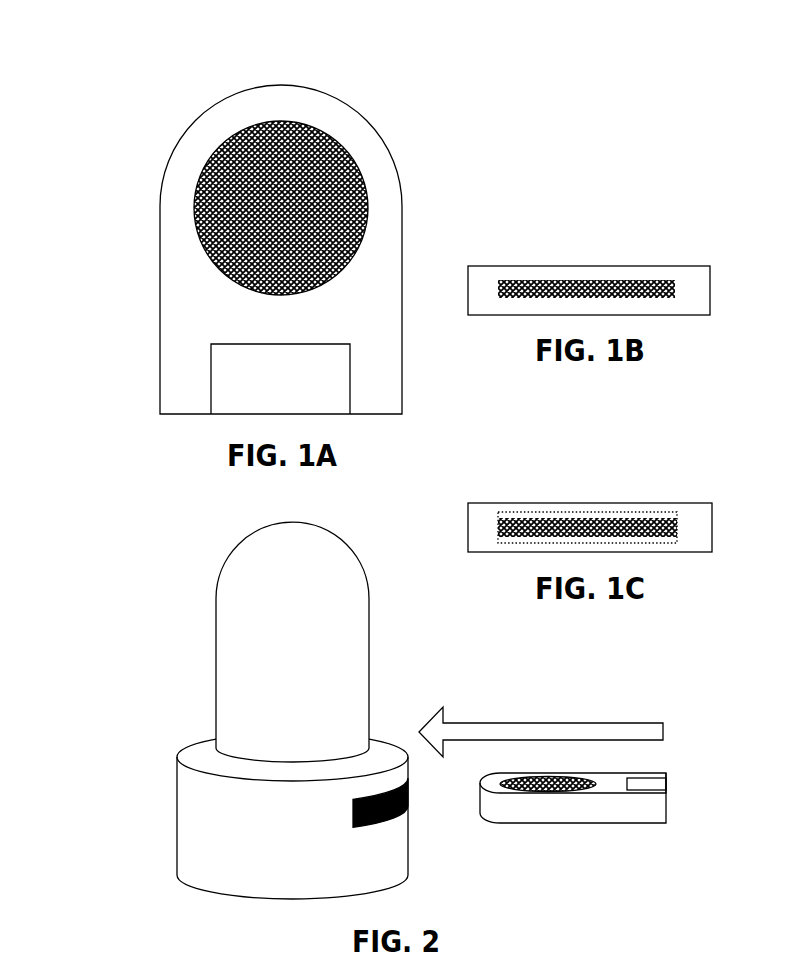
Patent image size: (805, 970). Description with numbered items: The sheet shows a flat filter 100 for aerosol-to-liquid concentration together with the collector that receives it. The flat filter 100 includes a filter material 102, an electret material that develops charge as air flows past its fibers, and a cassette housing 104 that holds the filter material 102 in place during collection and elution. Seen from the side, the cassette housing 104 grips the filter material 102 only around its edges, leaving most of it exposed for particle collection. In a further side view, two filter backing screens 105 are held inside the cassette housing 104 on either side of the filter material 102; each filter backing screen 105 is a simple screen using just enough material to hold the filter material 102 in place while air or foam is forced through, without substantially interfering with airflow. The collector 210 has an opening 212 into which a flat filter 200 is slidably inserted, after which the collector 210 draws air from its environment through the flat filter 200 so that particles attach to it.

In FIG. 1A, the flat filter 100 is at (275, 249).
In FIG. 1B, the flat filter 100 is at (589, 253).
In FIG. 1C, the flat filter 100 is at (570, 514).
In FIG. 1A, the filter material 102 is at (368, 205).
In FIG. 1B, the filter material 102 is at (590, 282).
In FIG. 1C, the filter material 102 is at (613, 517).
In FIG. 1A, the cassette housing 104 is at (160, 303).
In FIG. 1B, the cassette housing 104 is at (612, 266).
In FIG. 1C, the cassette housing 104 is at (630, 503).
In FIG. 1C, the filter backing screen 105 is at (530, 512).
In FIG. 2, the flat filter 200 is at (548, 823).
In FIG. 2, the collector 210 is at (216, 603).
In FIG. 2, the opening 212 is at (370, 825).